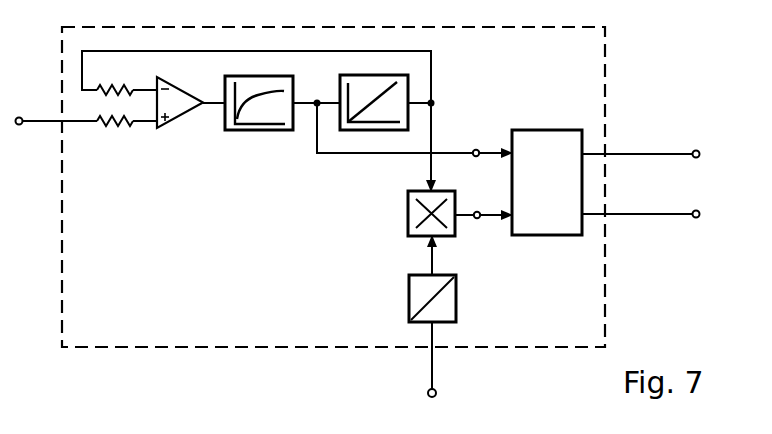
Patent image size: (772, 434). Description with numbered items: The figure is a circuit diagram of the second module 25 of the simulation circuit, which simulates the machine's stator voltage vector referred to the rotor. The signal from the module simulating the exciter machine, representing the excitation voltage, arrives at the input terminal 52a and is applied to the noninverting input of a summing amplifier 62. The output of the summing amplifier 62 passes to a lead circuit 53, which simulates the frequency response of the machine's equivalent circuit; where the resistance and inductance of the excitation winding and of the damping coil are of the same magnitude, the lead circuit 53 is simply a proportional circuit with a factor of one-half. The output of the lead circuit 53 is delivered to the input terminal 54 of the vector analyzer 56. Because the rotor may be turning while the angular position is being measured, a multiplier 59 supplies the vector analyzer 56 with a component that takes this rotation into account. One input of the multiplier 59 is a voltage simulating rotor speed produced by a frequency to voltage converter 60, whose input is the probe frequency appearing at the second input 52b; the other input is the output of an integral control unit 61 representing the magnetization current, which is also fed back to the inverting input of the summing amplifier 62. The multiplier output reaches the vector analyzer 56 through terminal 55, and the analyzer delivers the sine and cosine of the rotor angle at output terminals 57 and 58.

The second module 25 is at (607, 53).
The input terminal 52a is at (57, 138).
The second input 52b is at (428, 393).
The lead circuit 53 is at (280, 131).
The input terminal of vector analyzer 54 is at (476, 150).
The signal line/terminal 55 is at (477, 218).
The vector analyzer 56 is at (546, 207).
The sine output terminal 57 is at (699, 156).
The cosine output terminal 58 is at (699, 216).
The multiplier 59 is at (406, 212).
The frequency to voltage converter 60 is at (407, 297).
The integral control unit 61 is at (341, 88).
The summing amplifier 62 is at (188, 117).